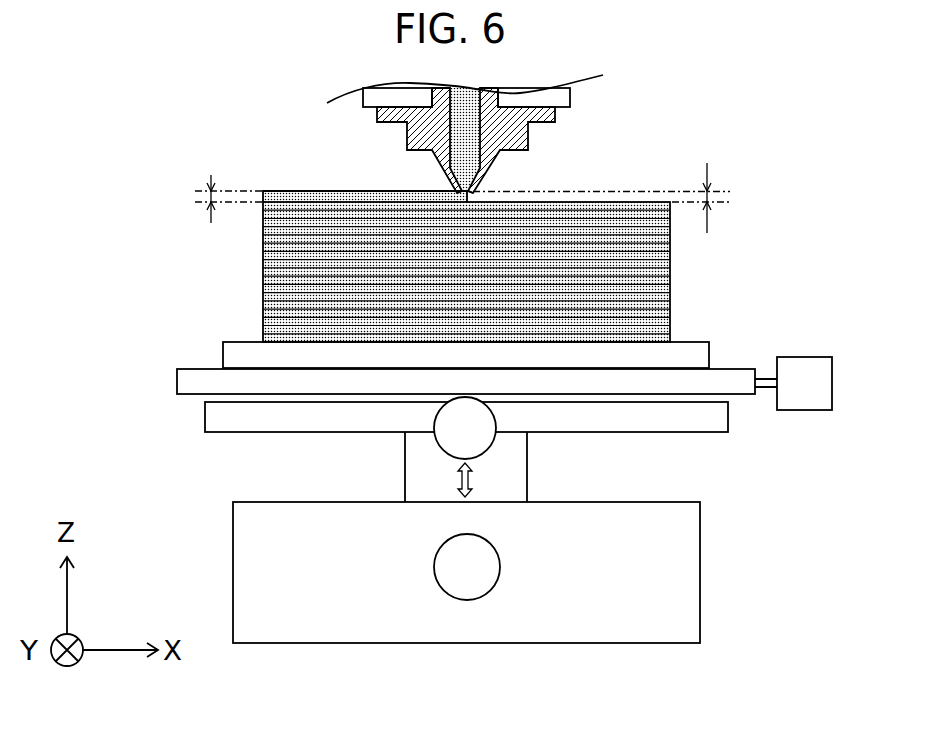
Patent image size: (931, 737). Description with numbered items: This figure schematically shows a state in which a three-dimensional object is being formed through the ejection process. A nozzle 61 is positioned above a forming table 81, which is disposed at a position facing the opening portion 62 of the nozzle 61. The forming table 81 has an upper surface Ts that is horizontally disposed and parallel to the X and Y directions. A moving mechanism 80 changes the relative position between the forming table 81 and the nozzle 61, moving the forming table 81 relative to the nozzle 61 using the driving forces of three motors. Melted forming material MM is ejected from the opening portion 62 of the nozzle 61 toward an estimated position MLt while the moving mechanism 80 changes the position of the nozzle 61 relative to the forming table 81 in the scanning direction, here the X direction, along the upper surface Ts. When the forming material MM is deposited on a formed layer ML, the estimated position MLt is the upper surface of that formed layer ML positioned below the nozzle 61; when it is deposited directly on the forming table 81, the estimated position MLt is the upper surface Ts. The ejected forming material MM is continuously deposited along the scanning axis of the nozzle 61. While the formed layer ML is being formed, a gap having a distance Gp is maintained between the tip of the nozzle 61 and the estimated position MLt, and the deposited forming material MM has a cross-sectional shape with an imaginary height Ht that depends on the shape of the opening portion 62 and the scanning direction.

The nozzle 61 is at (385, 142).
The opening portion 62 is at (453, 190).
The moving mechanism 80 is at (504, 464).
The forming table 81 is at (688, 357).
The forming material MM is at (497, 132).
The formed layer ML is at (263, 300).
The estimated position MLt is at (600, 203).
The upper surface Ts is at (673, 342).
The height Ht is at (212, 199).
The distance of the gap Gp is at (621, 198).